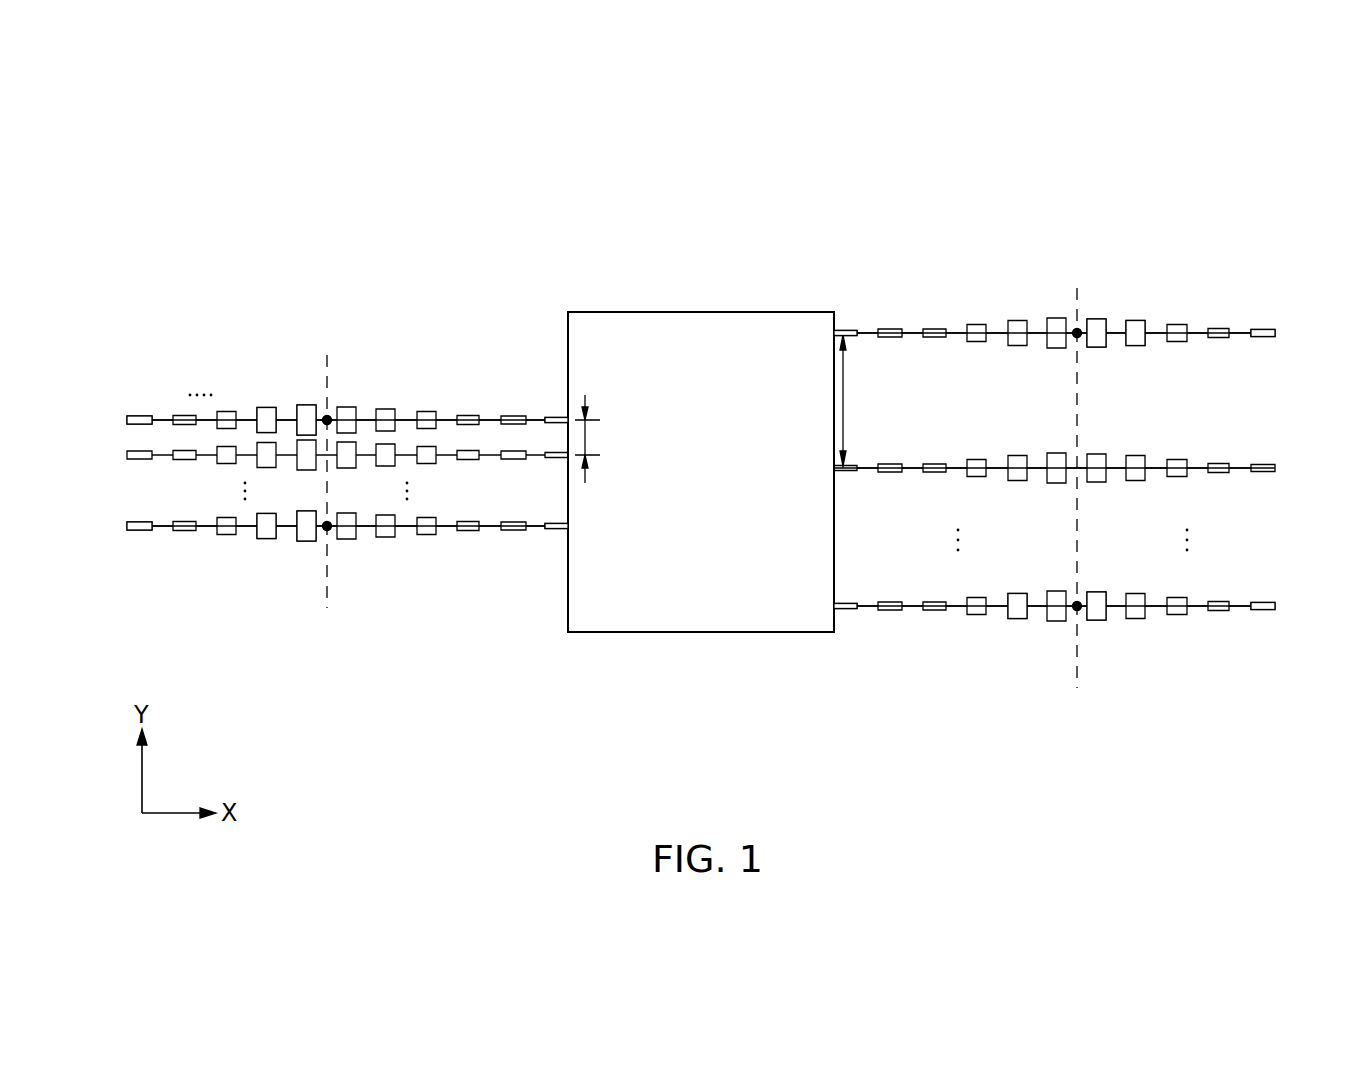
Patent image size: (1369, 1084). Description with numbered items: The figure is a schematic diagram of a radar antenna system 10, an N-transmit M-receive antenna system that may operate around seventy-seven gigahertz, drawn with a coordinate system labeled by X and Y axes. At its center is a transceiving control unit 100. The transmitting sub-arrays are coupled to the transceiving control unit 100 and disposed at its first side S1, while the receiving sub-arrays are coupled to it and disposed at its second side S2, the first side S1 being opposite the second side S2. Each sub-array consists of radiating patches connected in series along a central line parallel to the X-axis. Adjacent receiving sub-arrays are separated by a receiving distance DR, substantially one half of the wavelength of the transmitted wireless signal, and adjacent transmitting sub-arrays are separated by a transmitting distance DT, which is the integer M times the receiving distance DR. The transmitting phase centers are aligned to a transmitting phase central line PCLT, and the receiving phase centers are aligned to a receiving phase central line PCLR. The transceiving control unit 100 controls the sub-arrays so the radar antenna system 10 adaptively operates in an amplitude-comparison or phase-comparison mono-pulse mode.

The radar antenna system 10 is at (1133, 183).
The transceiving control unit 100 is at (752, 632).
The first side S1 is at (834, 322).
The second side S2 is at (568, 340).
The receiving phase central line PCLR is at (323, 497).
The transmitting phase central line PCLT is at (1070, 504).
The receiving distance DR is at (600, 439).
The transmitting distance DT is at (859, 400).